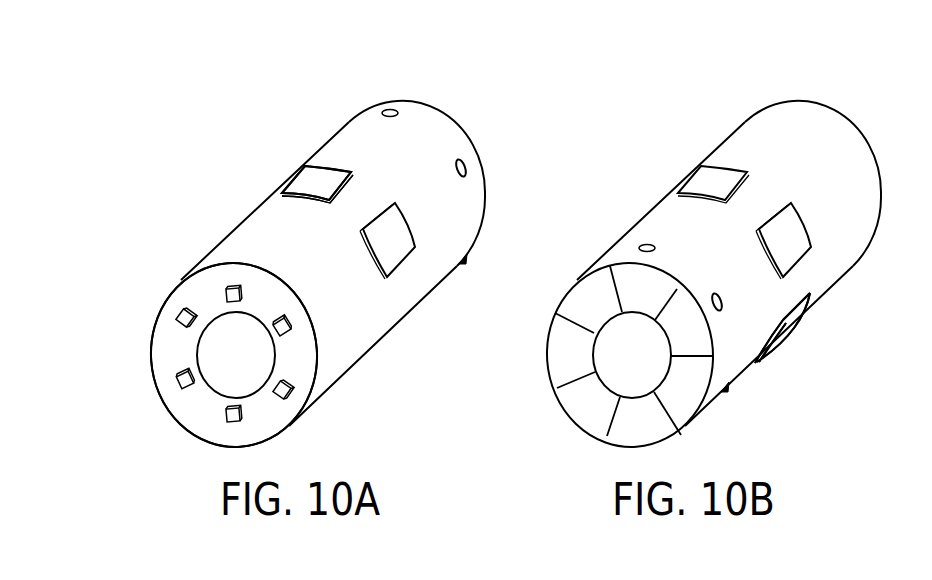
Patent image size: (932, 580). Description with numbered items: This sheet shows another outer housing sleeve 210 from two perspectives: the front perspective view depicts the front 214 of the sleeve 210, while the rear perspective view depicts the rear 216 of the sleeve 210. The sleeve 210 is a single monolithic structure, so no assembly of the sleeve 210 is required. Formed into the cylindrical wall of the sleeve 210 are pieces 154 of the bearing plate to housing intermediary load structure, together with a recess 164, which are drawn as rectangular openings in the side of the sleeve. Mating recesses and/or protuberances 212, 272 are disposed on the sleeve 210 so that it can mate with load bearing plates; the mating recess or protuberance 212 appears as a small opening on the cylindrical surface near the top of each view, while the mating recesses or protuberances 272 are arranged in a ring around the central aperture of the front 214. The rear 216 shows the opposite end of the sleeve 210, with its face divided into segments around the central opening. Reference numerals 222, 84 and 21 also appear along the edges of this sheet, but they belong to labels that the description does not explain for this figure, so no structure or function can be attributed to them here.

In FIG. 10A, the sleeve 210 is at (477, 129).
In FIG. 10B, the sleeve 210 is at (873, 129).
In FIG. 10A, the mating recess or protuberance 212 is at (388, 108).
In FIG. 10B, the mating recess or protuberance 212 is at (645, 243).
In FIG. 10A, the piece of bearing plate to housing intermediary load structure 154 is at (320, 183).
In FIG. 10B, the piece of bearing plate to housing intermediary load structure 154 is at (794, 326).
In FIG. 10A, the recess 164 is at (317, 184).
In FIG. 10B, the recess 164 is at (782, 328).
In FIG. 10A, the mating recess or protuberance 272 is at (229, 289).
In FIG. 10A, the front 214 is at (205, 412).
In FIG. 10B, the rear 216 is at (600, 396).
In FIG. 10A, the lead 222 is at (493, 579).
In FIG. 10A, the sensor 84 is at (401, 569).
In FIG. 10B, the component (cut off at sheet edge) 21 is at (924, 459).